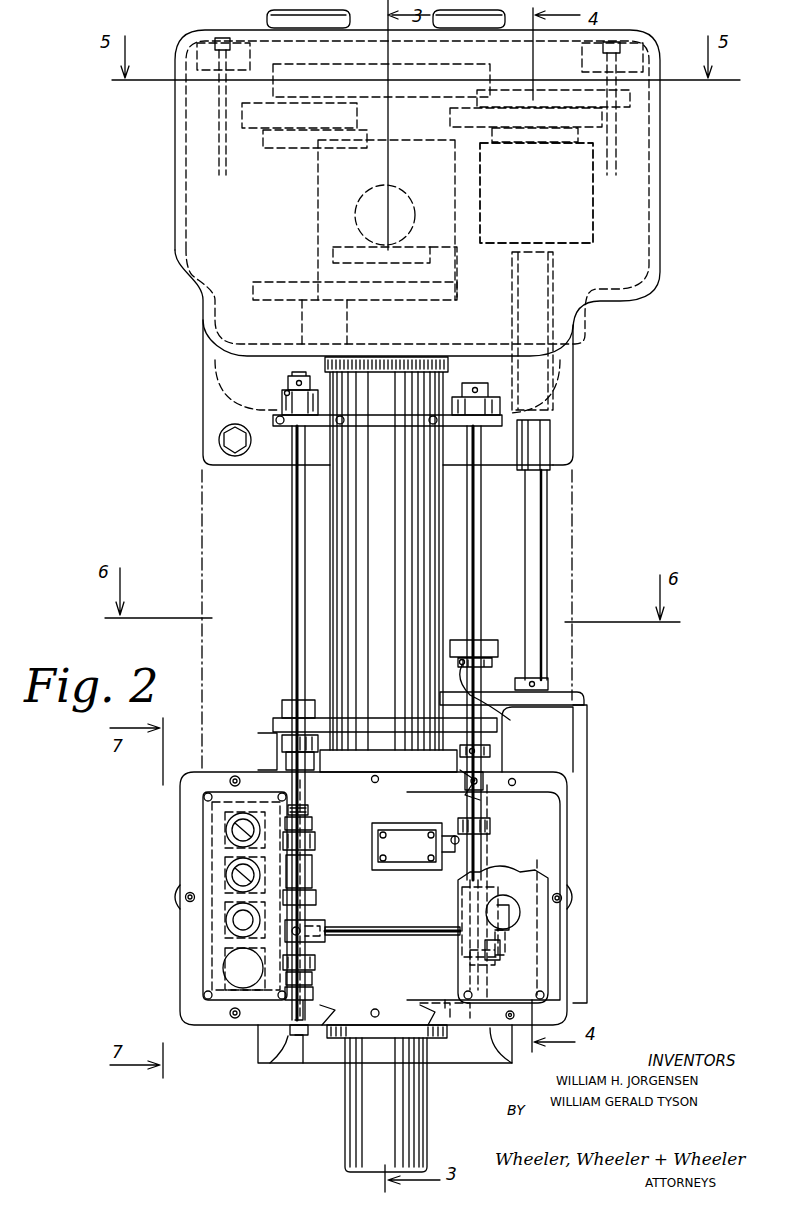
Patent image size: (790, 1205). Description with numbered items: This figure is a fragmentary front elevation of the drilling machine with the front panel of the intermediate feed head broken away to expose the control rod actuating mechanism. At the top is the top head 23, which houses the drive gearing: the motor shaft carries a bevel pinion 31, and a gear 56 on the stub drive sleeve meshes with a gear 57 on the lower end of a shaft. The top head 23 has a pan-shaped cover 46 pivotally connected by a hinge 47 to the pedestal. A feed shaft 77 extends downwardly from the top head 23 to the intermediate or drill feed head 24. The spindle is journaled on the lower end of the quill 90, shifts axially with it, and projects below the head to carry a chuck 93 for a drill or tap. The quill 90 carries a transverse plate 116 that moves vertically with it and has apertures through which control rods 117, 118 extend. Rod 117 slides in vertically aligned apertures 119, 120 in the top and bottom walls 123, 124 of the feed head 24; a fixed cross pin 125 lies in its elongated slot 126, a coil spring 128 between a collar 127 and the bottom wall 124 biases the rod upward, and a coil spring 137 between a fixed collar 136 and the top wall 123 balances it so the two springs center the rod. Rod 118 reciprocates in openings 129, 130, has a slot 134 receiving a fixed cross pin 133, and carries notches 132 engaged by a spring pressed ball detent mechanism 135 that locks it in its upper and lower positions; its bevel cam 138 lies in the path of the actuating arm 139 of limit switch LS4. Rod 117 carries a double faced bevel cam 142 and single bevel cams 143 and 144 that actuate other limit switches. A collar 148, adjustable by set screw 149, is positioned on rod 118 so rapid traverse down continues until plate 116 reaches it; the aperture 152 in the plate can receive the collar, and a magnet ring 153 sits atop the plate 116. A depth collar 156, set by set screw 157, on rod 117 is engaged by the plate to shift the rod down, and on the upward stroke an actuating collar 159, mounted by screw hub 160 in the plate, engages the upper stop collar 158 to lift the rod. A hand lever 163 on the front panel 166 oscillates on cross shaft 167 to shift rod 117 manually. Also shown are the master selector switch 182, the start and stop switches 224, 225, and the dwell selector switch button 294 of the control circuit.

The top head 23 is at (155, 220).
The intermediate or drill feed head 24 is at (150, 847).
The bevel pinion 31 is at (372, 196).
The pan-shaped cover 46 is at (213, 42).
The hinge 47 is at (270, 13).
The gear 56 is at (372, 254).
The gear 57 is at (470, 250).
The feed shaft 77 is at (548, 497).
The quill 90 is at (345, 560).
The chuck 93 is at (365, 1100).
The transverse plate 116 is at (370, 414).
The control rod 117 is at (290, 500).
The control rod 118 is at (470, 510).
The aperture 119 is at (288, 758).
The aperture 120 is at (262, 1045).
The top wall 123 is at (260, 768).
The bottom wall 124 is at (258, 1033).
The fixed cross pin 125 is at (300, 1036).
The vertically elongated slot 126 is at (300, 1063).
The collar 127 is at (314, 978).
The coil spring 128 is at (314, 994).
The opening 129 is at (490, 770).
The opening 130 is at (508, 1062).
The notches 132 is at (447, 990).
The fixed cross pin 133 is at (465, 782).
The vertically elongated slot 134 is at (475, 790).
The spring pressed ball detent mechanism 135 is at (448, 1005).
The fixed collar 136 is at (313, 828).
The coil spring 137 is at (310, 812).
The bevel cam 138 is at (490, 826).
The actuating arm 139 is at (453, 836).
The double faced bevel cam 142 is at (318, 962).
The single bevel cam 143 is at (317, 900).
The single bevel cam 144 is at (316, 845).
The collar 148 is at (490, 665).
The set screw 149 is at (500, 712).
The aperture 152 is at (490, 422).
The magnet ring 153 is at (495, 410).
The depth collar 156 is at (284, 708).
The set screw 157 is at (285, 738).
The upper stop collar 158 is at (290, 380).
The actuating collar 159 is at (283, 401).
The screw hub 160 is at (285, 428).
The hand lever 163 is at (502, 905).
The front panel 166 is at (205, 940).
The cross shaft 167 is at (385, 925).
The master selector switch 182 is at (233, 829).
The start switch 224 is at (230, 922).
The stop switch 225 is at (242, 967).
The dwell selector switch button 294 is at (232, 876).
The limit switch LS4 is at (442, 870).